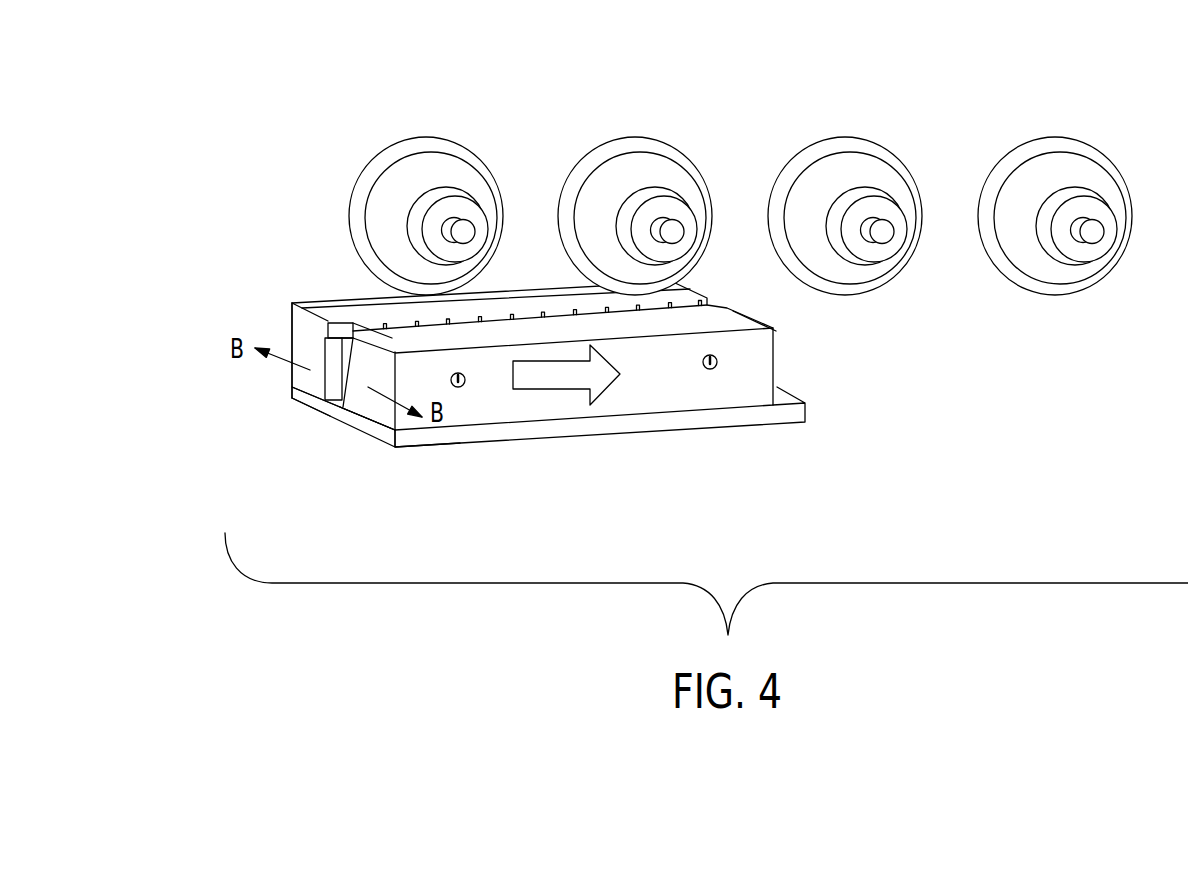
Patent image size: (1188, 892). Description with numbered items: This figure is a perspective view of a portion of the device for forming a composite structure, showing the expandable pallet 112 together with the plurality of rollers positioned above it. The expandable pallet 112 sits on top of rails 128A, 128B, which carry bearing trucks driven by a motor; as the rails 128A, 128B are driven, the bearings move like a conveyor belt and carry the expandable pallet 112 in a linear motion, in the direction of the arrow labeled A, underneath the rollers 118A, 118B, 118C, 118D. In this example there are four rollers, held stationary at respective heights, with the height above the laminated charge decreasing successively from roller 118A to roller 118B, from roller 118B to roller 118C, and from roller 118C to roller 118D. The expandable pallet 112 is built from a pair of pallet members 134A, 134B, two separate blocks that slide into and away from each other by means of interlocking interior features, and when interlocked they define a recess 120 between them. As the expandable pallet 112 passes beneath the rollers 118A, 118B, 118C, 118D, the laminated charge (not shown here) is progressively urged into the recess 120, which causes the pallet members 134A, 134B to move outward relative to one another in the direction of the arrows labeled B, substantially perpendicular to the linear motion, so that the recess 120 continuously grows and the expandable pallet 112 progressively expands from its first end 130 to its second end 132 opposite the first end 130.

The expandable pallet 112 is at (510, 400).
The roller 118A is at (405, 118).
The roller 118B is at (615, 120).
The roller 118C is at (828, 122).
The roller 118D is at (1066, 127).
The recess 120 is at (338, 368).
The rail 128A is at (291, 397).
The rail 128B is at (425, 437).
The first end 130 is at (777, 383).
The second end 132 is at (388, 421).
The pallet member 134A is at (301, 337).
The pallet member 134B is at (375, 372).